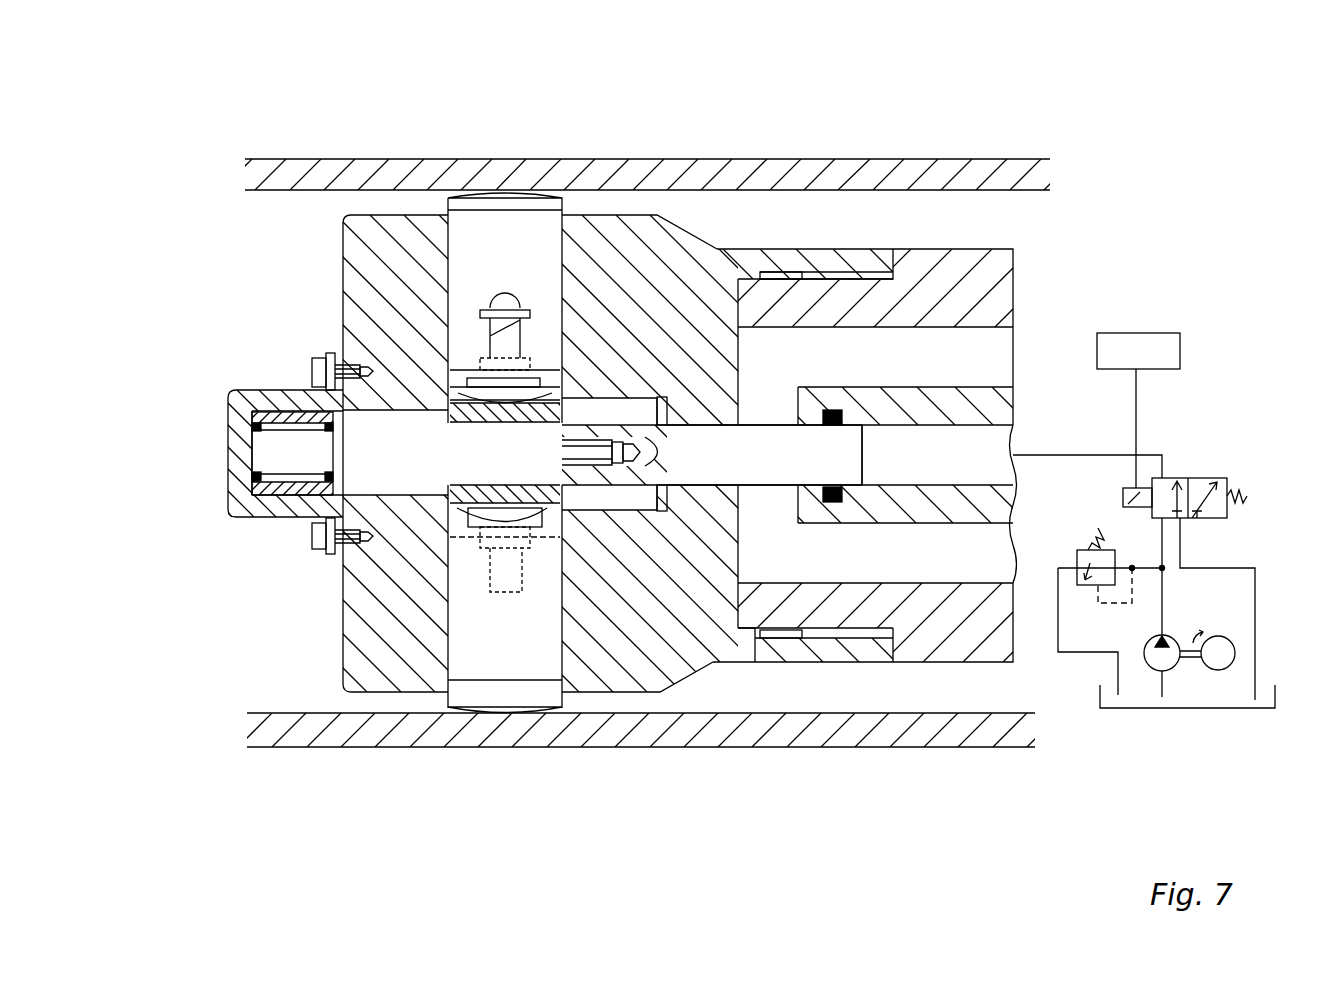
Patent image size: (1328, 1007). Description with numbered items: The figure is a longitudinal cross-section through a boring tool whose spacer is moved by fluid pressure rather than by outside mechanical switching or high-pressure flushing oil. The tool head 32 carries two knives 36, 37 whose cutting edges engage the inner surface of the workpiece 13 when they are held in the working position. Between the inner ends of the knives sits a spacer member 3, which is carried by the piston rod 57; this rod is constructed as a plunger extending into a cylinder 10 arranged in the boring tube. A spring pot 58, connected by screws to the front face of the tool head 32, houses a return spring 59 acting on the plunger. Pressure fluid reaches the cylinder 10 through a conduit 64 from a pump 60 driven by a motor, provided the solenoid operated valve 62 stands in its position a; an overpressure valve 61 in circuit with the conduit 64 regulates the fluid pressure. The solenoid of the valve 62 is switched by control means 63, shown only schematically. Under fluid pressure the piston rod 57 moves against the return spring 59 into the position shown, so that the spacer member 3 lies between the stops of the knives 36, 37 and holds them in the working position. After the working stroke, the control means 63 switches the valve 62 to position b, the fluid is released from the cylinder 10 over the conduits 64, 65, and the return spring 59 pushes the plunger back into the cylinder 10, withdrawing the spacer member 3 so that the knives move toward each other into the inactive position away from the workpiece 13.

The workpiece 13 is at (875, 185).
The tool head 32 is at (378, 232).
The knife 36 is at (512, 270).
The spacer member 3 is at (490, 490).
The knife 37 is at (518, 628).
The spring pot 58 is at (245, 435).
The return spring 59 is at (295, 470).
The piston rod 57 is at (785, 455).
The cylinder 10 is at (955, 460).
The conduit 64 is at (1087, 455).
The control means 63 is at (1153, 352).
The solenoid operated valve 62 is at (1240, 464).
The valve position a is at (1177, 478).
The valve position b is at (1217, 485).
The overpressure valve 61 is at (1090, 565).
The pump 60 is at (1162, 660).
The conduit 65 is at (1255, 628).